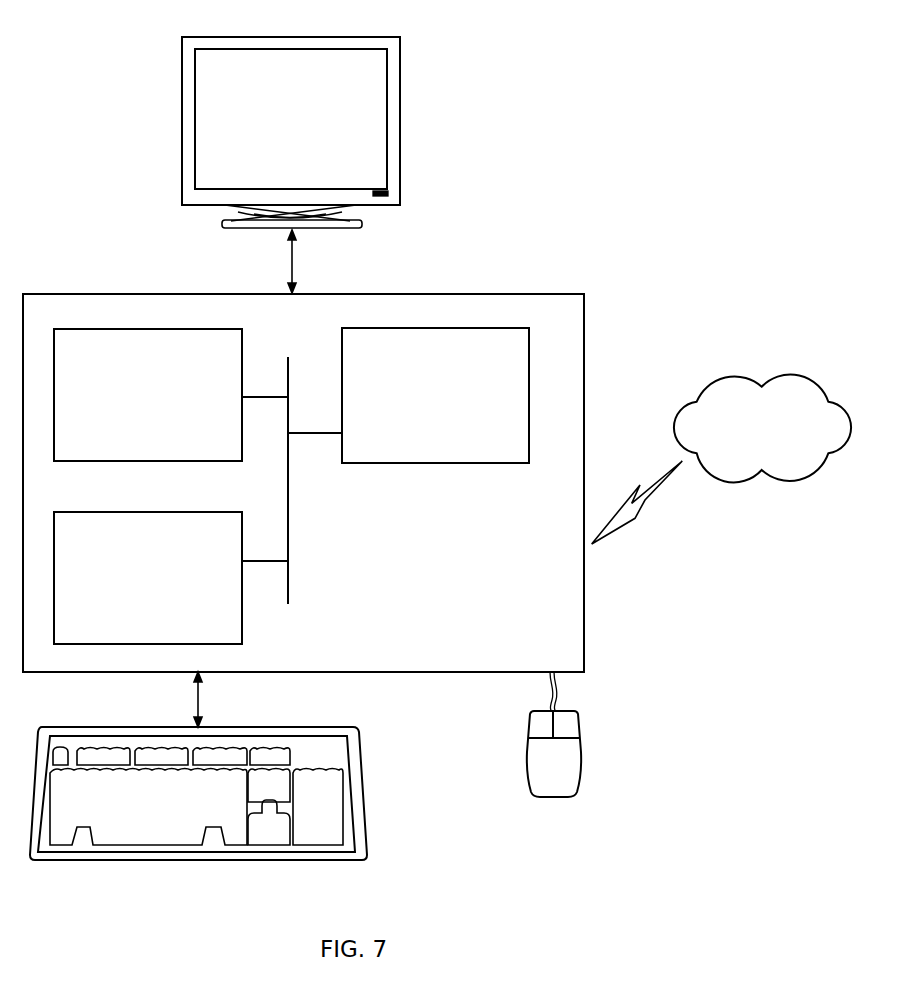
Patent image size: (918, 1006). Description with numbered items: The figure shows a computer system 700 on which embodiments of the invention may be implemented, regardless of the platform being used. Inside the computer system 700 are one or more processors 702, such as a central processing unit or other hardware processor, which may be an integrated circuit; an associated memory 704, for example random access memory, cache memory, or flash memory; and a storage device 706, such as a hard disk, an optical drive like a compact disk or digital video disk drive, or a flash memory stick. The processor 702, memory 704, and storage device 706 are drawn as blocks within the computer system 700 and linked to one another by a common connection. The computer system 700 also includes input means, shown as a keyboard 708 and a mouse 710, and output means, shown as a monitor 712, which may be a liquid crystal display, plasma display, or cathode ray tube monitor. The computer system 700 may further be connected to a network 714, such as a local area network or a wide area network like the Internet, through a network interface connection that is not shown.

The computer system 700 is at (633, 298).
The processor 702 is at (418, 393).
The memory 704 is at (130, 394).
The storage device 706 is at (130, 576).
The keyboard 708 is at (130, 805).
The mouse 710 is at (587, 805).
The monitor 712 is at (270, 126).
The network 714 is at (746, 430).